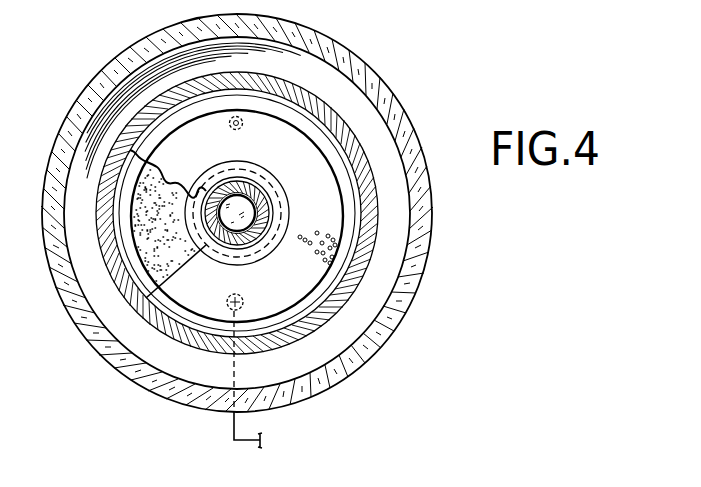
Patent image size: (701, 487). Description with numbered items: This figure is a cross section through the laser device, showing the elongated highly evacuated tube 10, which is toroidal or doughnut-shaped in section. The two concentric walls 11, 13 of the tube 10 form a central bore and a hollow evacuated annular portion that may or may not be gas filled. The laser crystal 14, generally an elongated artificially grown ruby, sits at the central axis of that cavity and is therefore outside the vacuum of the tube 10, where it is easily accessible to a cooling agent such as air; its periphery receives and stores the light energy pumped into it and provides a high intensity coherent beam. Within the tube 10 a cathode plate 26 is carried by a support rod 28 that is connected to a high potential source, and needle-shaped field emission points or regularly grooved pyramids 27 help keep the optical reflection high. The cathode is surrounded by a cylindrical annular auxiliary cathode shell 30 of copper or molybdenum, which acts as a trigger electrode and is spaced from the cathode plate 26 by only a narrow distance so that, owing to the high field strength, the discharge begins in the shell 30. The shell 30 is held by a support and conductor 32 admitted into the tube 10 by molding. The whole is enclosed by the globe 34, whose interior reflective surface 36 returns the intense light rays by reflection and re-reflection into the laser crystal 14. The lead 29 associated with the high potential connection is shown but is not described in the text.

The tube 10 is at (359, 128).
The concentric wall 11 is at (259, 215).
The concentric wall 13 is at (141, 340).
The laser crystal 14 is at (238, 212).
The cathode plate 26 is at (171, 229).
The field emission points 27 is at (317, 229).
The support rod 28 is at (231, 295).
The high potential lead 29 is at (240, 309).
The auxiliary cathode shell 30 is at (190, 162).
The support and conductor 32 is at (230, 127).
The globe 34 is at (363, 70).
The interior reflective surface 36 is at (296, 53).